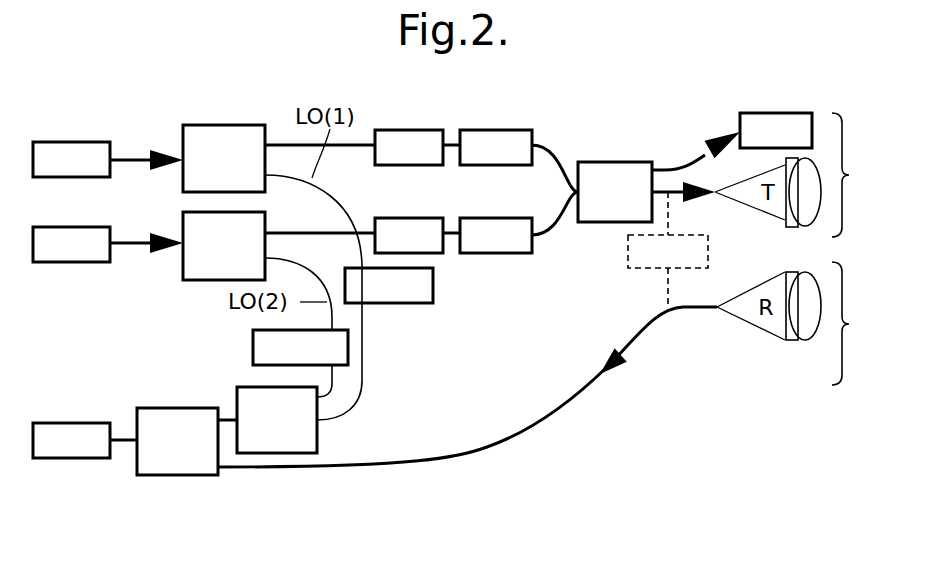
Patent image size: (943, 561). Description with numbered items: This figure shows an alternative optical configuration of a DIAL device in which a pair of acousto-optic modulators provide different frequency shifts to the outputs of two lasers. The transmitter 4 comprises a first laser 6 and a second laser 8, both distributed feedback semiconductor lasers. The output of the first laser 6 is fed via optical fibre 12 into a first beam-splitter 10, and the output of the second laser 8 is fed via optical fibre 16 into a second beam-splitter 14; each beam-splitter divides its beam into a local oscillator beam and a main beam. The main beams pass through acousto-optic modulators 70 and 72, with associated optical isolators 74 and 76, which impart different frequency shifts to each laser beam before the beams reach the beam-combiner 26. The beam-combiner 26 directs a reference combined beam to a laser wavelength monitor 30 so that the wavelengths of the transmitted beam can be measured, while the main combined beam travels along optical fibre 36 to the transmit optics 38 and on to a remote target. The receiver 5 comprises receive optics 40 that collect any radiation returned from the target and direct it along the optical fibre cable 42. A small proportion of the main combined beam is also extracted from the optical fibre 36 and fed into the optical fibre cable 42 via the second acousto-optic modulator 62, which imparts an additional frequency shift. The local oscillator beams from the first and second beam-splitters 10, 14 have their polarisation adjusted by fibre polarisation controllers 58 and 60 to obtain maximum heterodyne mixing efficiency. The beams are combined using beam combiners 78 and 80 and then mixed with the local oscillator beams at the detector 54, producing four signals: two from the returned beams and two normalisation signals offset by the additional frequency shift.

The transmitter 4 is at (849, 175).
The receiver 5 is at (849, 323).
The first laser 6 is at (60, 143).
The second laser 8 is at (62, 262).
The first beam-splitter 10 is at (212, 131).
The optical fibre 12 is at (133, 157).
The second beam-splitter 14 is at (197, 269).
The optical fibre 16 is at (133, 242).
The beam-combiner 26 is at (610, 176).
The laser wavelength monitor 30 is at (797, 119).
The optical fibre 36 is at (672, 186).
The transmit optics 38 is at (801, 236).
The receive optics 40 is at (798, 352).
The optical fibre cable 42 is at (563, 412).
The detector 54 is at (60, 459).
The fibre polarisation controller 58 is at (394, 304).
The fibre polarisation controller 60 is at (253, 357).
The second acousto-optic modulator 62 is at (647, 268).
The acousto-optic modulator 70 is at (500, 134).
The acousto-optic modulator 72 is at (490, 254).
The optical isolator 74 is at (433, 135).
The optical isolator 76 is at (387, 226).
The beam combiner 78 is at (274, 444).
The beam combiner 80 is at (176, 461).